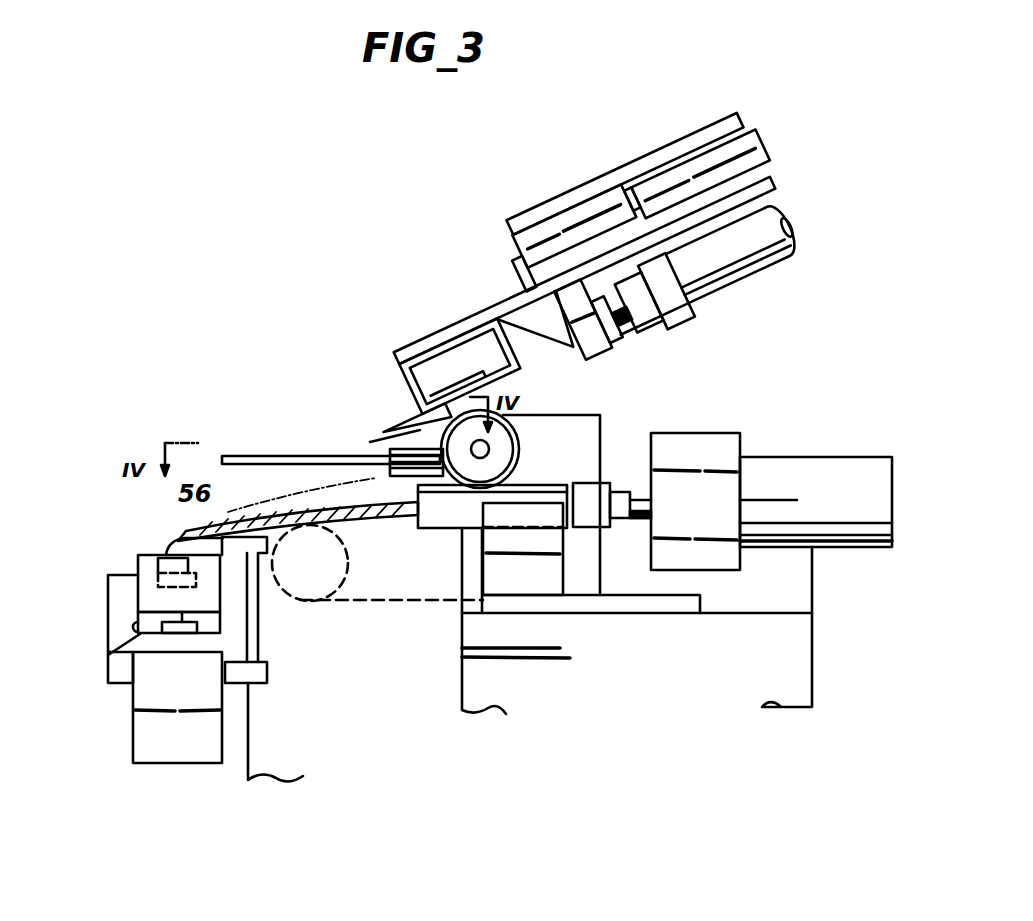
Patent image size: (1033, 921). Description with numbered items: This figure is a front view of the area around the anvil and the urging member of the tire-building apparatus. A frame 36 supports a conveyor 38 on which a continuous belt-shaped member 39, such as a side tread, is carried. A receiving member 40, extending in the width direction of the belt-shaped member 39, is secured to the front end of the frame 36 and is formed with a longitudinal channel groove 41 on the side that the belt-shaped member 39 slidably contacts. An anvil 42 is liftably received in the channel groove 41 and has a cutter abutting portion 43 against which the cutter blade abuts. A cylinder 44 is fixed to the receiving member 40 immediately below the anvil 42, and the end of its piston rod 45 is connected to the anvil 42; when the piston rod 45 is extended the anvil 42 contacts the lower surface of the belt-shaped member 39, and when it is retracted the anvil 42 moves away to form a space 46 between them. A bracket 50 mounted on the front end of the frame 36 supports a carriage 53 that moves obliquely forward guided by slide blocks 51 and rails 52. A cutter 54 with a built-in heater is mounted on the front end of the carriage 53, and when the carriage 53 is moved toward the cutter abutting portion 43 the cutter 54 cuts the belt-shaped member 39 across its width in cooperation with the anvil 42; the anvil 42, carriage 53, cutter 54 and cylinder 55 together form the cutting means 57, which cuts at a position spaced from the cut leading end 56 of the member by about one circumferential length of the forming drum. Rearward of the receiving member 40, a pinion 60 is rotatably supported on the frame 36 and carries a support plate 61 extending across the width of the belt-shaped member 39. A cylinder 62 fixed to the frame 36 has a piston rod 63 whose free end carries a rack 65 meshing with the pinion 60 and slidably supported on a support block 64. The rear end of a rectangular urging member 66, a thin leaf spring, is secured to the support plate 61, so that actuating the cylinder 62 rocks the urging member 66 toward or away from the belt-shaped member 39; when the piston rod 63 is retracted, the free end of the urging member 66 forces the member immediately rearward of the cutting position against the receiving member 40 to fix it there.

The frame 36 is at (262, 680).
The conveyor 38 is at (392, 600).
The belt-shaped member 39 is at (350, 525).
The receiving member 40 is at (126, 632).
The channel groove 41 is at (108, 655).
The anvil 42 is at (138, 594).
The cutter abutting portion 43 is at (165, 563).
The cylinder 44 is at (173, 752).
The piston rod 45 is at (182, 637).
The space 46 is at (187, 548).
The bracket 50 is at (612, 172).
The slide blocks 51 is at (567, 226).
The rails 52 is at (515, 272).
The carriage 53 is at (440, 338).
The cutter 54 is at (393, 430).
The cylinder 55 is at (770, 268).
The cut leading end 56 is at (622, 330).
The cutting means 57 is at (714, 314).
The pinion 60 is at (520, 457).
The support plate 61 is at (368, 442).
The cylinder 62 is at (822, 462).
The piston rod 63 is at (638, 497).
The support block 64 is at (522, 586).
The rack 65 is at (445, 528).
The urging member 66 is at (262, 457).